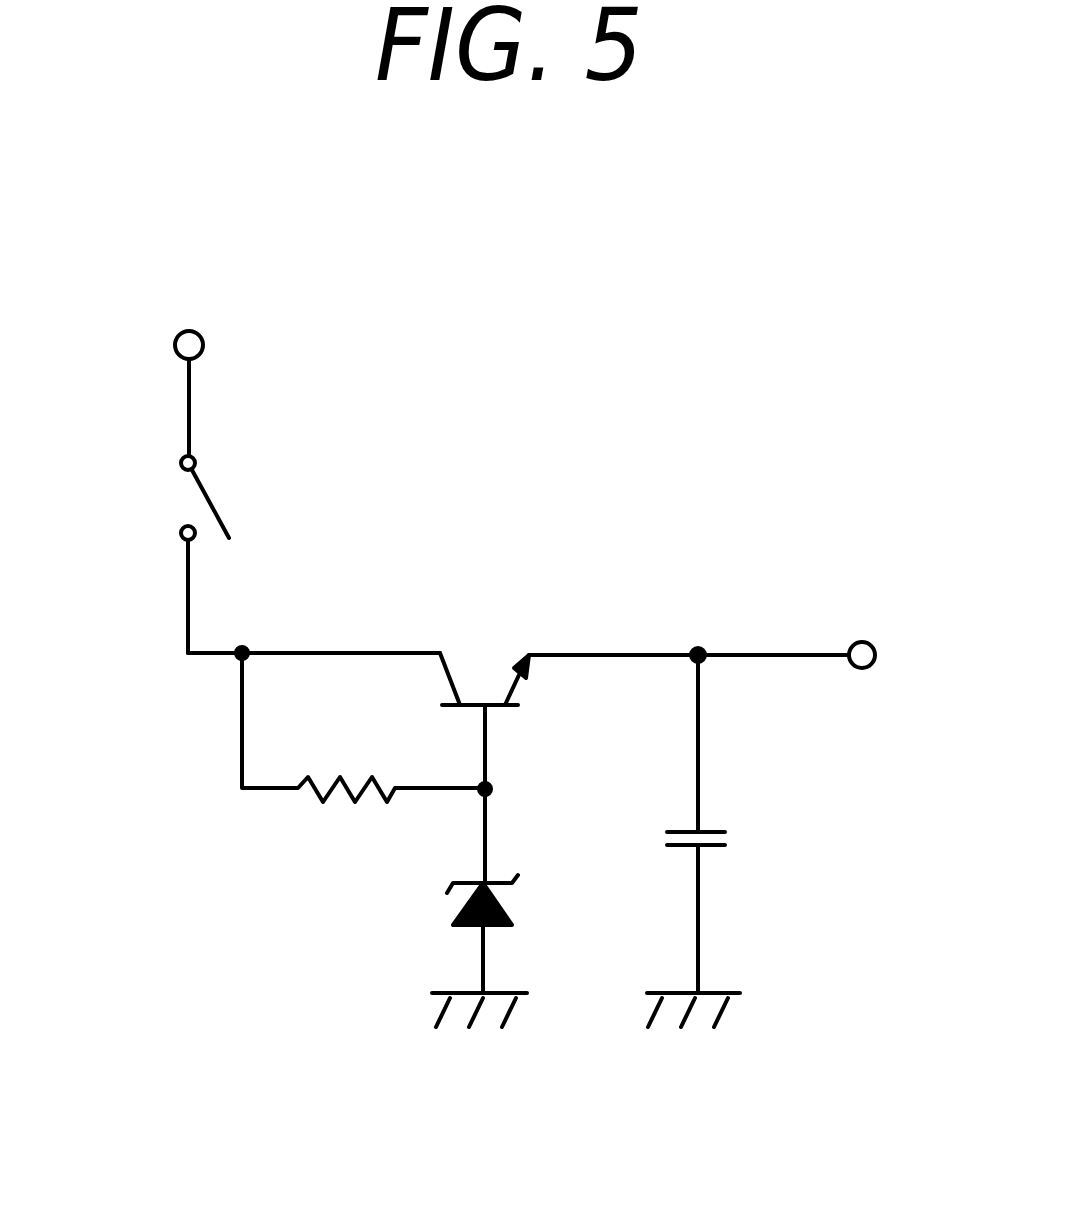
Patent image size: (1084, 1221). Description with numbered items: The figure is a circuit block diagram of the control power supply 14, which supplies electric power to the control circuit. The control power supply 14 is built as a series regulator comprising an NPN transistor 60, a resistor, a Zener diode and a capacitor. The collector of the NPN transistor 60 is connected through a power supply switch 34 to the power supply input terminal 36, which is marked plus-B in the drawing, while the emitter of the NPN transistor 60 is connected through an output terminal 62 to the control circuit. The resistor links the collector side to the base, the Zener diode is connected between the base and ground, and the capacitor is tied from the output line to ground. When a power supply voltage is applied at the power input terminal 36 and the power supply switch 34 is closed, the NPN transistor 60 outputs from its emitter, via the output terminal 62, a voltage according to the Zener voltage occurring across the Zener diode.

The control power supply 14 is at (495, 695).
The power supply switch 34 is at (220, 515).
The power supply input terminal 36 is at (175, 343).
The NPN transistor 60 is at (520, 708).
The output terminal 62 is at (860, 670).